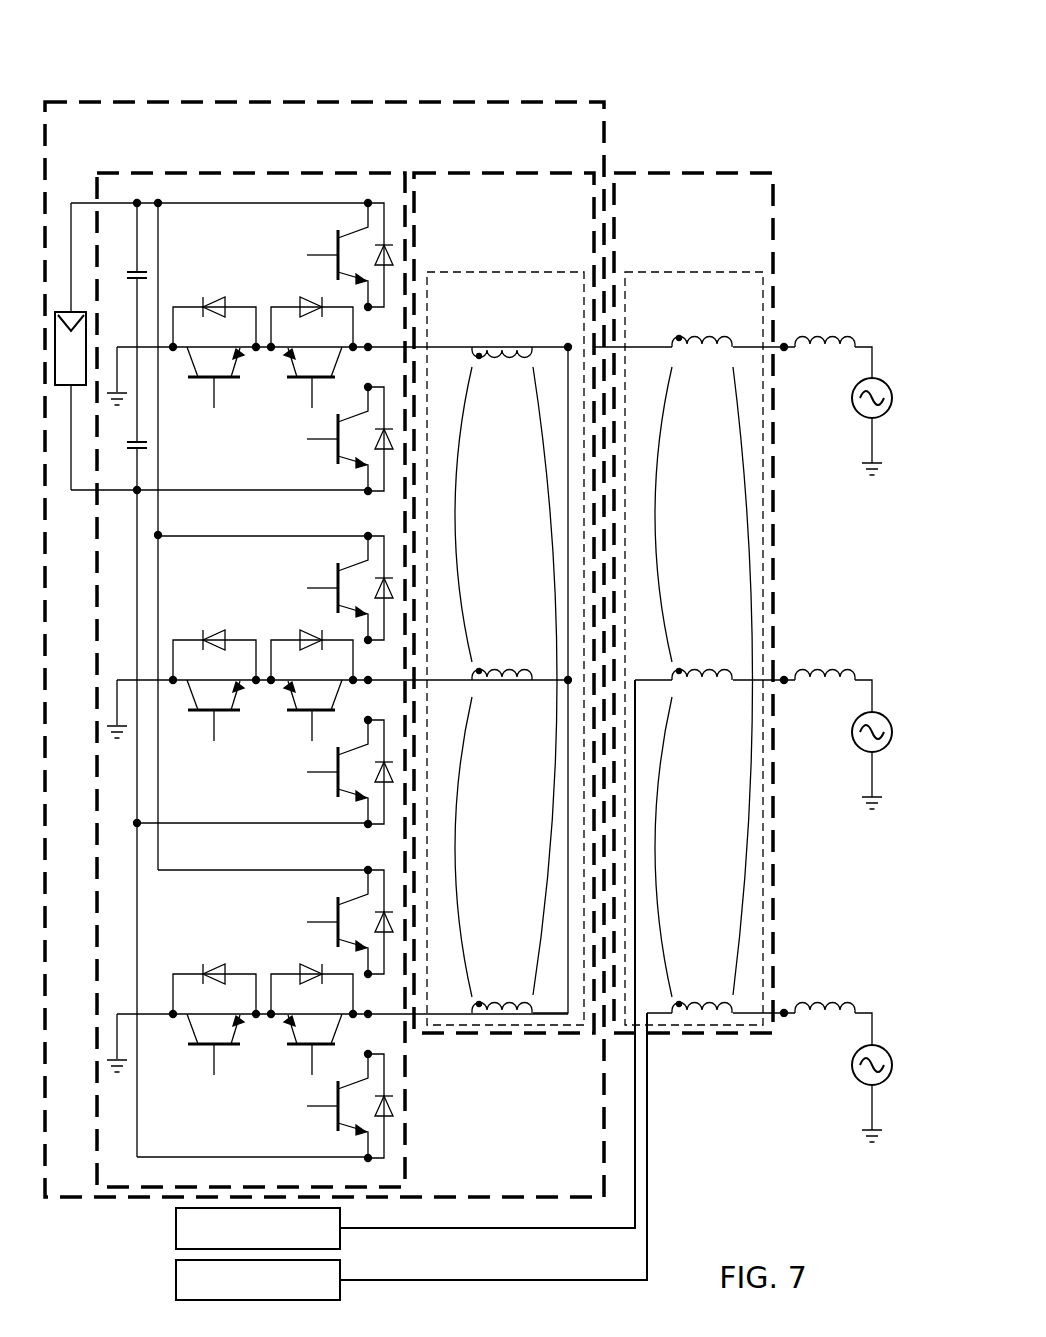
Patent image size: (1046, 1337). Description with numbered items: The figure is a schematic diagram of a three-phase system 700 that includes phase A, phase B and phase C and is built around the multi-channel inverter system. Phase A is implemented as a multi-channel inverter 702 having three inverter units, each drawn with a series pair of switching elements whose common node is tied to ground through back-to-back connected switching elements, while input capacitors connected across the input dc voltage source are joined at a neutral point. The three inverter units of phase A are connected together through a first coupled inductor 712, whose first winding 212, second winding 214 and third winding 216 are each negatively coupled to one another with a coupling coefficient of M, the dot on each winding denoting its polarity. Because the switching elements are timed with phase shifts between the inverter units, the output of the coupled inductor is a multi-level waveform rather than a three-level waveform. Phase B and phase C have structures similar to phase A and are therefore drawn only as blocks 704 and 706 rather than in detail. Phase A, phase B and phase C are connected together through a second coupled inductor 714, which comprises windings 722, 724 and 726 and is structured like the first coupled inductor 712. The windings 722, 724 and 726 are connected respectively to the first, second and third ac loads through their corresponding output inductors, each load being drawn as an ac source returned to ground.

The three-phase system 700 is at (648, 60).
The multi-channel inverter 702 is at (202, 171).
The phase B inverter circuit 704 is at (176, 1233).
The phase C inverter circuit 706 is at (176, 1285).
The first coupled inductor 712 is at (542, 171).
The second coupled inductor 714 is at (720, 171).
The first winding 212 is at (495, 366).
The second winding 214 is at (495, 668).
The third winding 216 is at (495, 1001).
The winding 722 is at (695, 335).
The winding 724 is at (695, 668).
The winding 726 is at (695, 1001).